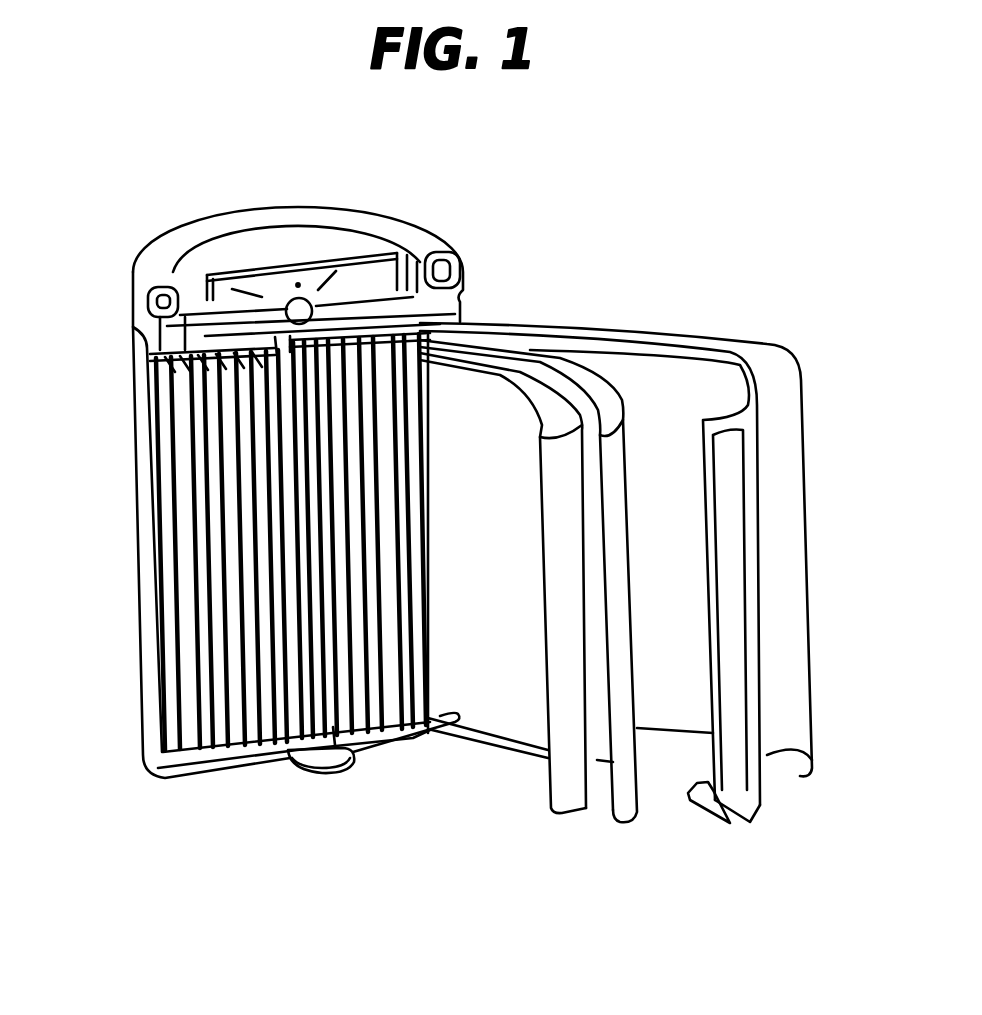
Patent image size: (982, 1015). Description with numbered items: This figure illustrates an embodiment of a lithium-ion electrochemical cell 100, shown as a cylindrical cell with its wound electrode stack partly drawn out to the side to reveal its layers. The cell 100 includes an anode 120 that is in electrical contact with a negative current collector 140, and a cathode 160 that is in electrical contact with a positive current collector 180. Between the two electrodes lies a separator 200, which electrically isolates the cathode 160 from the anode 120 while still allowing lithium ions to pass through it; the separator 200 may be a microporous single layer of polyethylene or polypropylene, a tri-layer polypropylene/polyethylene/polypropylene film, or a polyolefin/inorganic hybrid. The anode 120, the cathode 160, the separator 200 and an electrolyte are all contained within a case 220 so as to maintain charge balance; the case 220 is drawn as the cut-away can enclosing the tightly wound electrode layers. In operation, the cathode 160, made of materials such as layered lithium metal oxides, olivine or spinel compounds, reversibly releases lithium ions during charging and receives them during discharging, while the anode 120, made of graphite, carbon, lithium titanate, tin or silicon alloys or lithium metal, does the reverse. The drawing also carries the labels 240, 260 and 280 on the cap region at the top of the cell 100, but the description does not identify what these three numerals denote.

The lithium-ion electrochemical cell 100 is at (672, 210).
The anode 120 is at (777, 762).
The negative current collector 140 is at (752, 812).
The cathode 160 is at (577, 806).
The positive current collector 180 is at (326, 318).
The separator 200 is at (628, 424).
The case 220 is at (155, 788).
The cap assembly 240 is at (287, 237).
The gasket 260 is at (141, 296).
The safety vent 280 is at (371, 282).